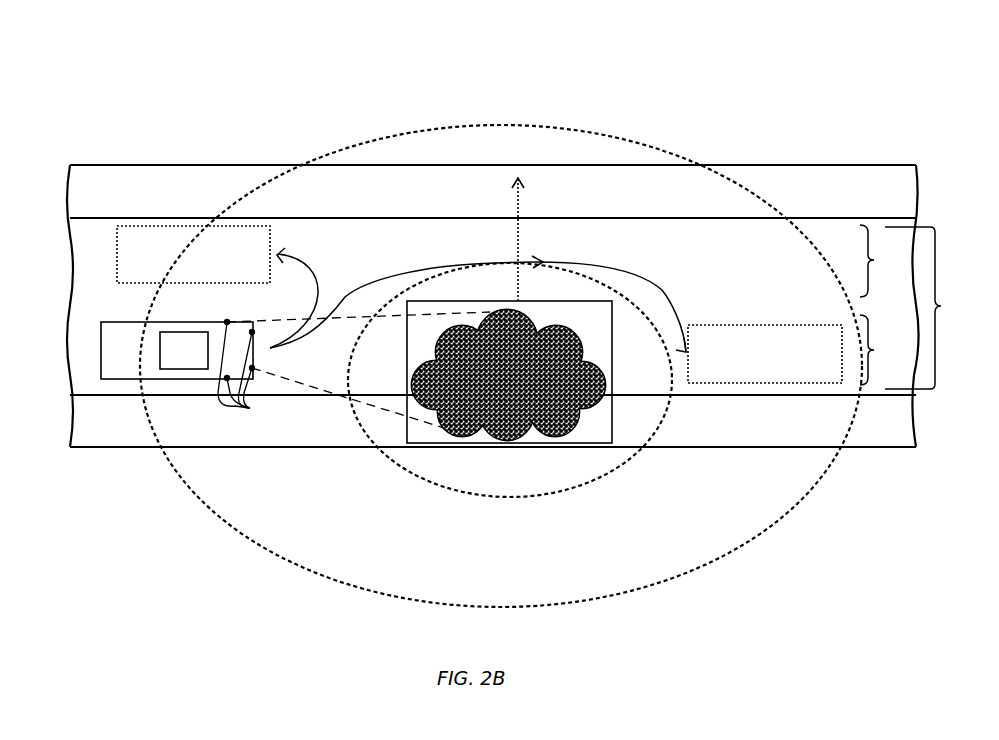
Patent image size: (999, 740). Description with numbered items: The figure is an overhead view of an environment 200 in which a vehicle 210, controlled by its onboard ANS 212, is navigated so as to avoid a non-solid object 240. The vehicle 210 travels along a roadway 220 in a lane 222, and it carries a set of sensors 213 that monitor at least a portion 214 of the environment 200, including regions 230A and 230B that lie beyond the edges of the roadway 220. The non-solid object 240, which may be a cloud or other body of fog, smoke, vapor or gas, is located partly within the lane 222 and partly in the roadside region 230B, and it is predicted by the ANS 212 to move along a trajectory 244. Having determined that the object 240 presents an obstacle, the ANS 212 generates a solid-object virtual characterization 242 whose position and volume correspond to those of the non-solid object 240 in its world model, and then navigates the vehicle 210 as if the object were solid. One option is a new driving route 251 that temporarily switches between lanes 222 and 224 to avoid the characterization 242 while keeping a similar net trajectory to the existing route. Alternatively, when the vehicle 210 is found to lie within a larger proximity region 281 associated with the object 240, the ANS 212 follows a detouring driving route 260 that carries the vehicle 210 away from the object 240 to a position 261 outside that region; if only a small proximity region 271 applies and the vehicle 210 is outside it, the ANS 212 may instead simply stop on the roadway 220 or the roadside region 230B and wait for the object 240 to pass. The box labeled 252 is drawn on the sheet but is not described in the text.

The environment 200 is at (240, 82).
The vehicle 210 is at (150, 358).
The ANS 212 is at (175, 358).
The sensors 213 is at (244, 377).
The monitored portion of the environment 214 is at (373, 408).
The roadway 220 is at (933, 308).
The lane 222 is at (887, 350).
The lane 224 is at (887, 261).
The portion of the environment beyond the roadway edge 230A is at (760, 185).
The roadside region 230B is at (886, 435).
The non-solid object 240 is at (533, 323).
The virtual characterization 242 is at (417, 442).
The predicted trajectory 244 is at (517, 206).
The new driving route 251 is at (443, 267).
The second detector 252 is at (765, 354).
The detouring driving route 260 is at (305, 262).
The position 261 is at (193, 254).
The small proximity region 271 is at (633, 452).
The larger proximity region 281 is at (743, 538).